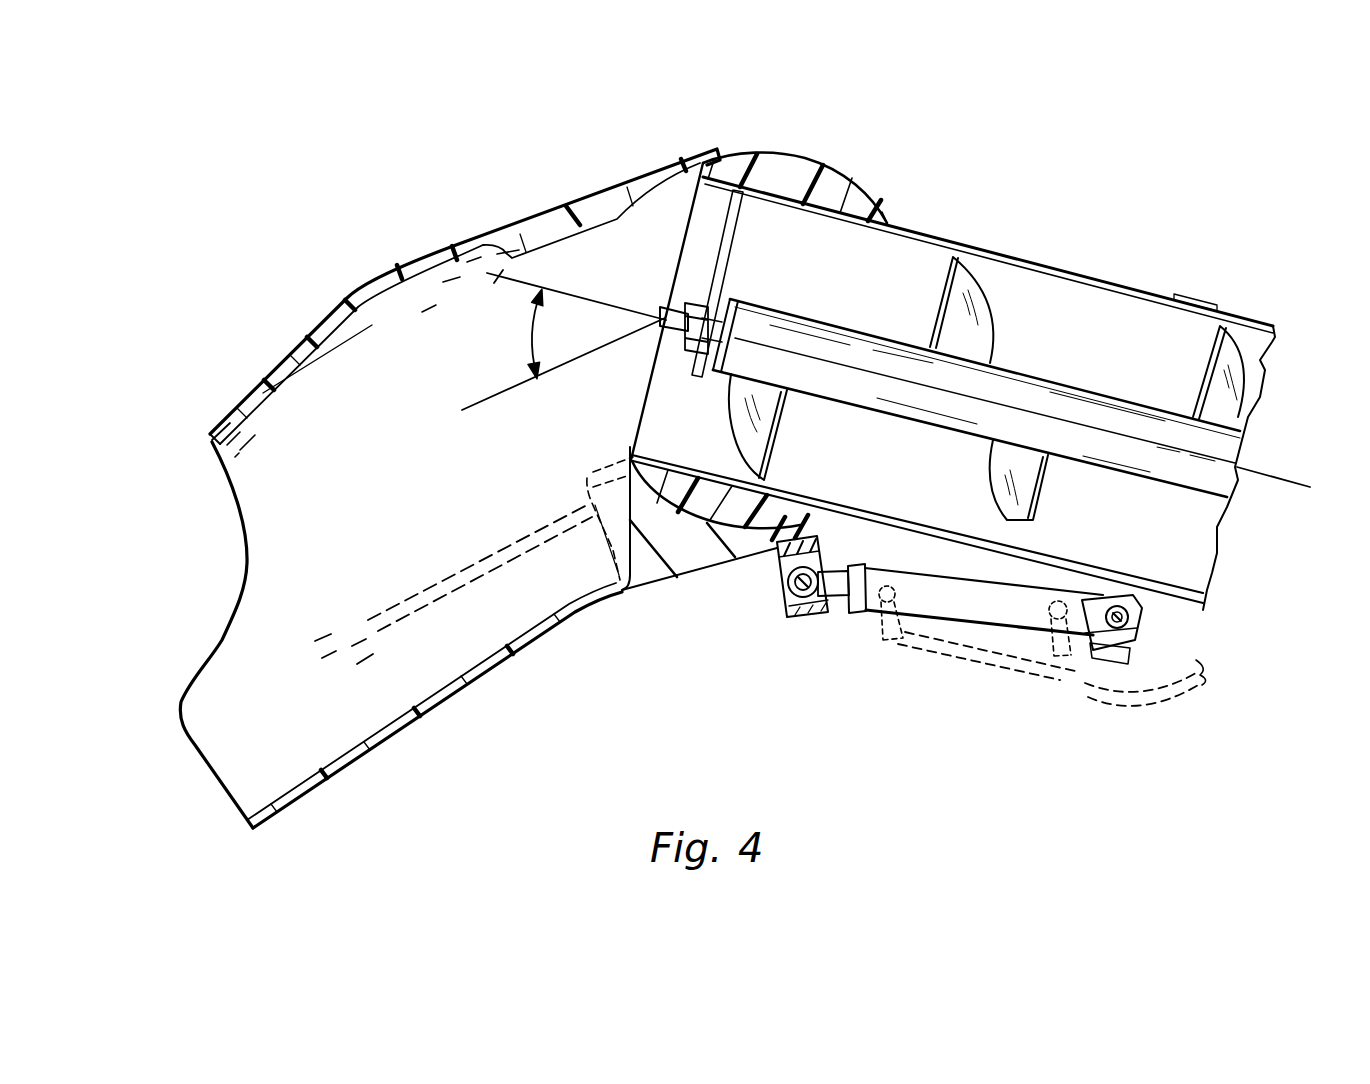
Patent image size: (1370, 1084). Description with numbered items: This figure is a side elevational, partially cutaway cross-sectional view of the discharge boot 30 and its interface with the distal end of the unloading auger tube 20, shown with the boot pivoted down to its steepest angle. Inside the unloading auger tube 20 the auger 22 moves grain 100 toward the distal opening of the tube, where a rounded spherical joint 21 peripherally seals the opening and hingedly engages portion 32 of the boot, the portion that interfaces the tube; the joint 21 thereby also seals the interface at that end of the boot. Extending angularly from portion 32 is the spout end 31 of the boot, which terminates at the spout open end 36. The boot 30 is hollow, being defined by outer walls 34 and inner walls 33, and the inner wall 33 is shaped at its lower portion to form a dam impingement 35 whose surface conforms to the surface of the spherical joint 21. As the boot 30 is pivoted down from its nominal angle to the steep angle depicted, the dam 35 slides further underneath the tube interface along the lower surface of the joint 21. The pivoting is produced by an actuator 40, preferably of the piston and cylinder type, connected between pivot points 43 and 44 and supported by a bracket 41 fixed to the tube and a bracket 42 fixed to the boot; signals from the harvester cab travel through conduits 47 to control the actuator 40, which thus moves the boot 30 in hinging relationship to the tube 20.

The unloading auger tube 20 is at (1093, 276).
The spherical joint 21 is at (810, 164).
The auger 22 is at (1125, 392).
The discharge boot 30 is at (335, 240).
The spout end 31 is at (238, 396).
The portion of boot interfacing the auger tube 32 is at (428, 251).
The inner walls 33 is at (553, 243).
The outer walls 34 is at (408, 732).
The dam impingement 35 is at (626, 517).
The spout open end 36 is at (232, 618).
The actuator 40 is at (950, 621).
The bracket on tube 41 is at (797, 618).
The bracket on boot 42 is at (1097, 652).
The pivot point 43 is at (788, 585).
The pivot point 44 is at (1133, 618).
The conduits 47 is at (1185, 690).
The grain 100 is at (465, 637).